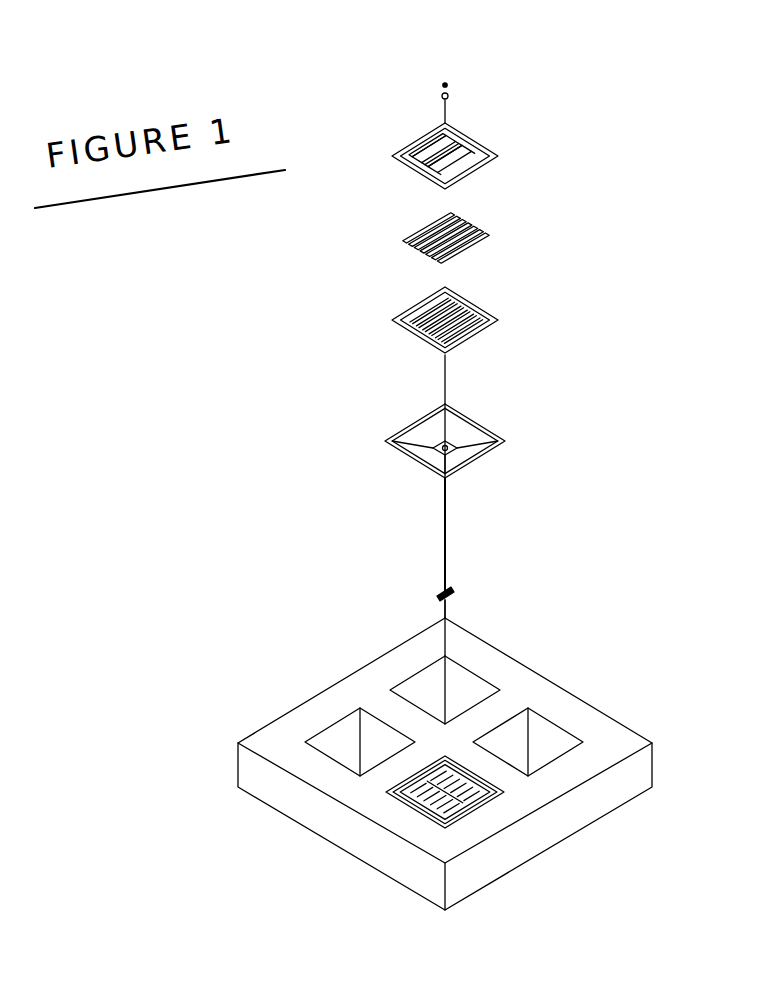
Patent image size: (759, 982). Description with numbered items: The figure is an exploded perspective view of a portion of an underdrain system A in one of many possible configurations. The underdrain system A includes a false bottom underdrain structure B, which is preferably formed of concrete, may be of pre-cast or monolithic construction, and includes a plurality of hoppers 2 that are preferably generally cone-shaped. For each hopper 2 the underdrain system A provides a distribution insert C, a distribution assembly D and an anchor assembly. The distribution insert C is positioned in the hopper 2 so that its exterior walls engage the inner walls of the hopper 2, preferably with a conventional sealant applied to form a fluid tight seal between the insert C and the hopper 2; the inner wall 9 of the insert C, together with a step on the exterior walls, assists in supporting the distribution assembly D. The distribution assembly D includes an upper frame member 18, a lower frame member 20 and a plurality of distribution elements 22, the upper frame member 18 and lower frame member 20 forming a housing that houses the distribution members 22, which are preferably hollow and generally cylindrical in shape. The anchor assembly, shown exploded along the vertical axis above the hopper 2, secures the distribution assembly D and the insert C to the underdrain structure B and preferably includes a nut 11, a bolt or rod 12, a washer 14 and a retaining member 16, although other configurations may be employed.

The nut 11 is at (452, 82).
The washer 14 is at (434, 97).
The upper frame member 18 is at (483, 138).
The distribution elements 22 is at (481, 220).
The lower frame member 20 is at (487, 298).
The distribution insert C is at (492, 424).
The inner wall 9 is at (445, 444).
The bolt or rod 12 is at (444, 529).
The retaining member 16 is at (460, 587).
The hoppers 2 is at (340, 745).
The distribution assembly D is at (482, 768).
The false bottom underdrain structure B is at (655, 762).
The underdrain system A is at (172, 722).